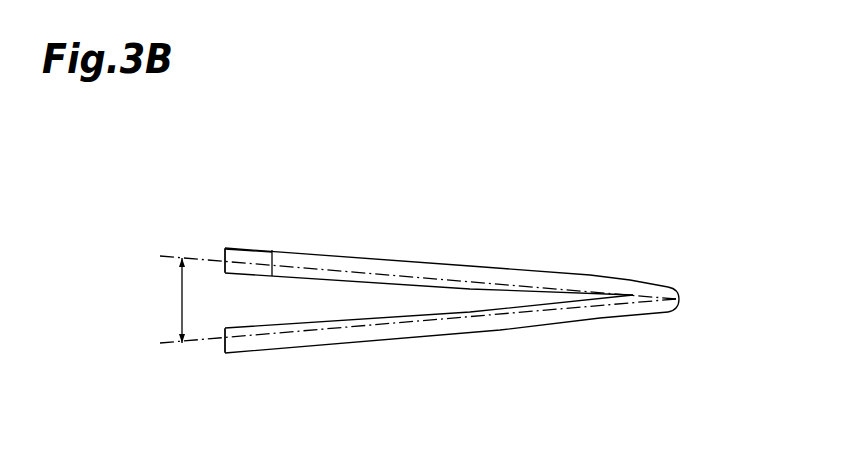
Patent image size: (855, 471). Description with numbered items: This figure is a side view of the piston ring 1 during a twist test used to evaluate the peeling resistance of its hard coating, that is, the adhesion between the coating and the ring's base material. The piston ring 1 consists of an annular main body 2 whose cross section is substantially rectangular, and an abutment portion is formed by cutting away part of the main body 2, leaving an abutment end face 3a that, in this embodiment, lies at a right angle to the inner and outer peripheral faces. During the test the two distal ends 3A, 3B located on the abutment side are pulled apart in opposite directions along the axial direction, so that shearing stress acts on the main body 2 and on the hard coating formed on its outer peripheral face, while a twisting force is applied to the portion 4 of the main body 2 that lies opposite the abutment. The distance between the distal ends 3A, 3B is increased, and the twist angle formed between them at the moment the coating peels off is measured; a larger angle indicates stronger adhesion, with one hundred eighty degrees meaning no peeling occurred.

The piston ring 1 is at (630, 193).
The main body 2 is at (468, 262).
The distal end 3A is at (264, 249).
The abutment end face 3a is at (247, 258).
The distal end 3B is at (257, 355).
The portion of the main body opposite to the abutment portion 4 is at (681, 298).